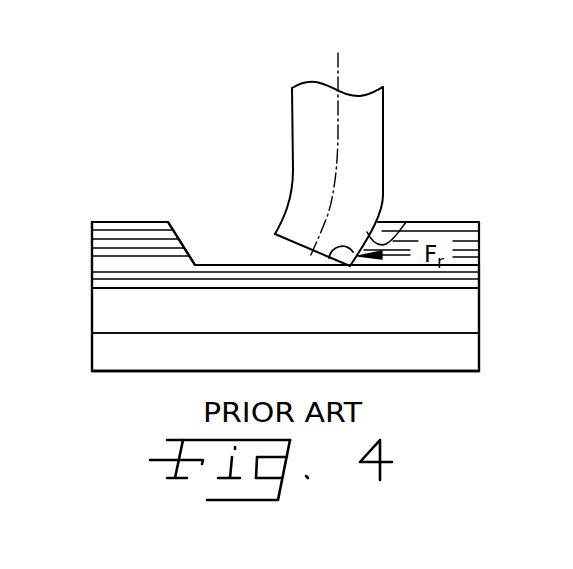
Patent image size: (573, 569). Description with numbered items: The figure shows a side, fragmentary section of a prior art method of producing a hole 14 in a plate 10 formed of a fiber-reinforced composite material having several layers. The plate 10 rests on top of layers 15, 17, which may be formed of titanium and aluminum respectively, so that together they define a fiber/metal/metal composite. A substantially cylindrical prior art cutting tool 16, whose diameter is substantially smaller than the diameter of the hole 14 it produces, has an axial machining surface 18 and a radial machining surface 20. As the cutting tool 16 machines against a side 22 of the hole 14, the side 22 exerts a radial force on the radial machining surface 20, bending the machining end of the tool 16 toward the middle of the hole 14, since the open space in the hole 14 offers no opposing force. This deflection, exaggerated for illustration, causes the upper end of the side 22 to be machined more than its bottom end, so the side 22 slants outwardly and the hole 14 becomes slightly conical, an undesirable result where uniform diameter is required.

The plate 10 is at (102, 245).
The hole 14 is at (232, 238).
The layer 15 is at (102, 310).
The cutting tool 16 is at (375, 112).
The layer 17 is at (110, 352).
The axial machining surface 18 is at (280, 238).
The radial machining surface 20 is at (370, 228).
The side of hole 22 is at (327, 253).